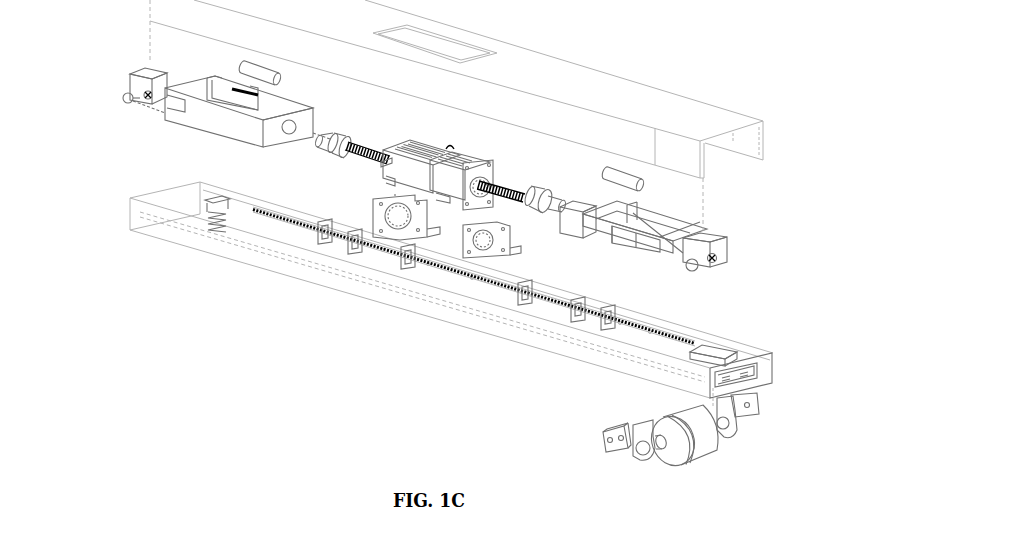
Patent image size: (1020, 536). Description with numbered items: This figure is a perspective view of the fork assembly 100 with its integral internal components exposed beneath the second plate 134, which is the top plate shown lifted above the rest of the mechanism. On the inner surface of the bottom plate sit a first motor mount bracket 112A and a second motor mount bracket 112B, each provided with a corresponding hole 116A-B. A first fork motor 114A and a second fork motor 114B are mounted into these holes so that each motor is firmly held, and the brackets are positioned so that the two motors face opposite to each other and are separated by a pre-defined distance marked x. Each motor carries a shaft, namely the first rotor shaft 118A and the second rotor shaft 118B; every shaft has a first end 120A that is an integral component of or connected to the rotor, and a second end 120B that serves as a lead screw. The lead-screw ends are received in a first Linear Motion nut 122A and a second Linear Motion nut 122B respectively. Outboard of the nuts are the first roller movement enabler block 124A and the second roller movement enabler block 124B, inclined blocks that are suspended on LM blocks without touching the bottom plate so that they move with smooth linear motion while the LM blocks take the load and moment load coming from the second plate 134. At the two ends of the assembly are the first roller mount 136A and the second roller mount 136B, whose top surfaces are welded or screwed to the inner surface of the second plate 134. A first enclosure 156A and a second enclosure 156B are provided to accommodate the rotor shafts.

The fork assembly 100 is at (700, 61).
The first motor mount bracket 112A is at (375, 222).
The second motor mount bracket 112B is at (495, 247).
The first fork motor 114A is at (400, 158).
The second fork motor 114B is at (440, 198).
The holes 116A-B is at (404, 262).
The first rotor shaft 118A is at (383, 153).
The second rotor shaft 118B is at (485, 193).
The first end 120A is at (445, 190).
The second end 120B is at (348, 140).
The first Linear Motion (LM) nut 122A is at (322, 145).
The second Linear Motion (LM) nut 122B is at (538, 213).
The first roller movement enabler block 124A is at (220, 107).
The second roller movement enabler block 124B is at (618, 237).
The second plate 134 is at (571, 78).
The first roller mount 136A is at (130, 82).
The second roller mount 136B is at (727, 245).
The first enclosure 156A is at (250, 72).
The second enclosure 156B is at (632, 183).